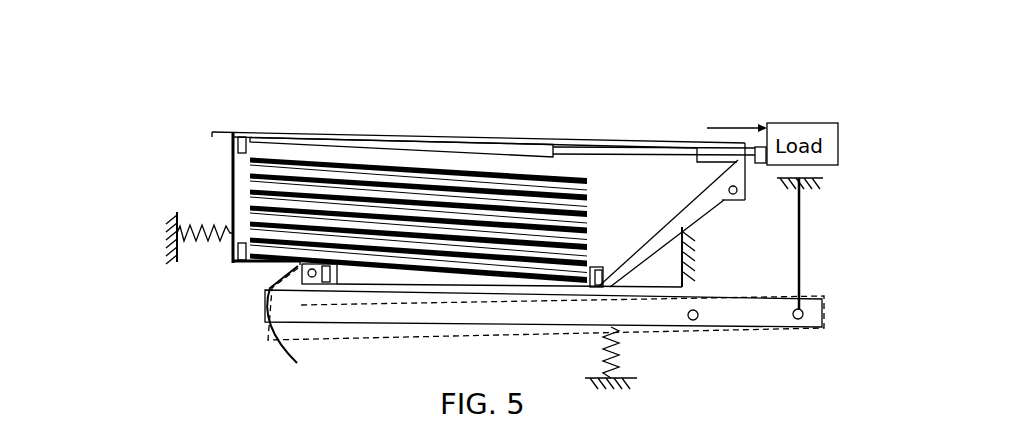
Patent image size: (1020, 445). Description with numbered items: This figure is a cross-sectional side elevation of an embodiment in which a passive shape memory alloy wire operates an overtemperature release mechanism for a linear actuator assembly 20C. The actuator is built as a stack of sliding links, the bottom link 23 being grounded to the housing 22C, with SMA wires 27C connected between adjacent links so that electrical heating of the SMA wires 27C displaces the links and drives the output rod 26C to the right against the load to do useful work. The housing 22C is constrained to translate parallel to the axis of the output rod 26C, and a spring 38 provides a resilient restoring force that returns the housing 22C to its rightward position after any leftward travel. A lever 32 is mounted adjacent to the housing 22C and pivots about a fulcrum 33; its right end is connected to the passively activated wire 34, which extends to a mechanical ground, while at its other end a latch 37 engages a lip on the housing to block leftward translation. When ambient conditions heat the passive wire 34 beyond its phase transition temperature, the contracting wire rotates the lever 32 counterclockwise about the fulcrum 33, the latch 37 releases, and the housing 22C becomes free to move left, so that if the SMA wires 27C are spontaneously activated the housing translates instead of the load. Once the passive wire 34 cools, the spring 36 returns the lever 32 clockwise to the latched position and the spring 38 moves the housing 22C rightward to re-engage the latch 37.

The linear actuator assembly 20C is at (315, 155).
The SMA wires 27C is at (397, 258).
The output rod 26C is at (660, 147).
The housing 22C is at (700, 208).
The bottom link 23 is at (697, 262).
The latch 37 is at (296, 269).
The spring 38 is at (200, 210).
The lever 32 is at (430, 306).
The fulcrum 33 is at (698, 320).
The passively activated wire 34 is at (802, 250).
The spring 36 is at (600, 341).